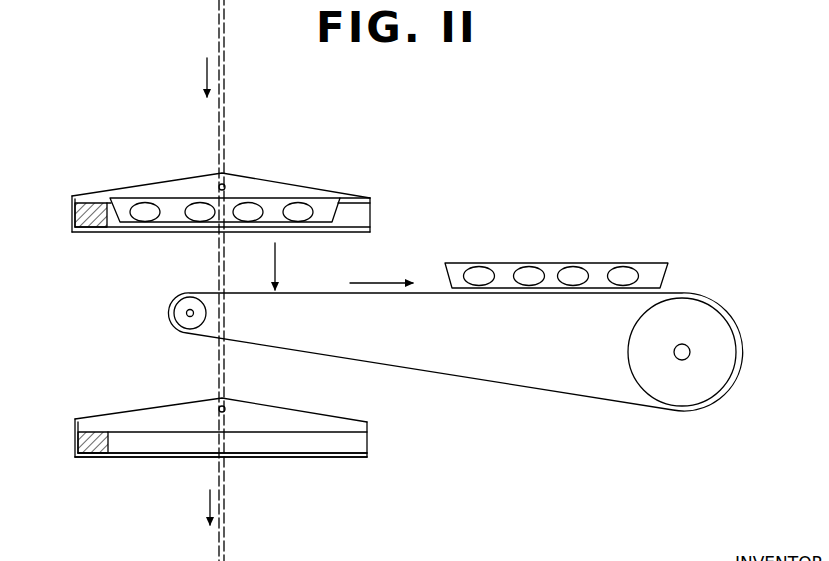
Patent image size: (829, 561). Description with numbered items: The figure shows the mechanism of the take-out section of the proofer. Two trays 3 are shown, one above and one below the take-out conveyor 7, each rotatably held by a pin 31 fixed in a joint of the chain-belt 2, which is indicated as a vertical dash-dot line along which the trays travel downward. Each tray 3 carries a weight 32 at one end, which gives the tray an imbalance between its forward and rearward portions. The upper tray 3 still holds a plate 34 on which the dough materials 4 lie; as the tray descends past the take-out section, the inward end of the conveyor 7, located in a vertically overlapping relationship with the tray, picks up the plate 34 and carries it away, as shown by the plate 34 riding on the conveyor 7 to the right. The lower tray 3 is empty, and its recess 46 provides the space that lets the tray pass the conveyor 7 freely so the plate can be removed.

The chain-belt 2 is at (226, 37).
The tray 3 is at (250, 179).
The dough materials 4 is at (296, 205).
The take-out conveyor 7 is at (368, 294).
The pin 31 is at (220, 185).
The weight 32 is at (97, 215).
The plate 34 is at (340, 200).
The recess 46 is at (276, 460).